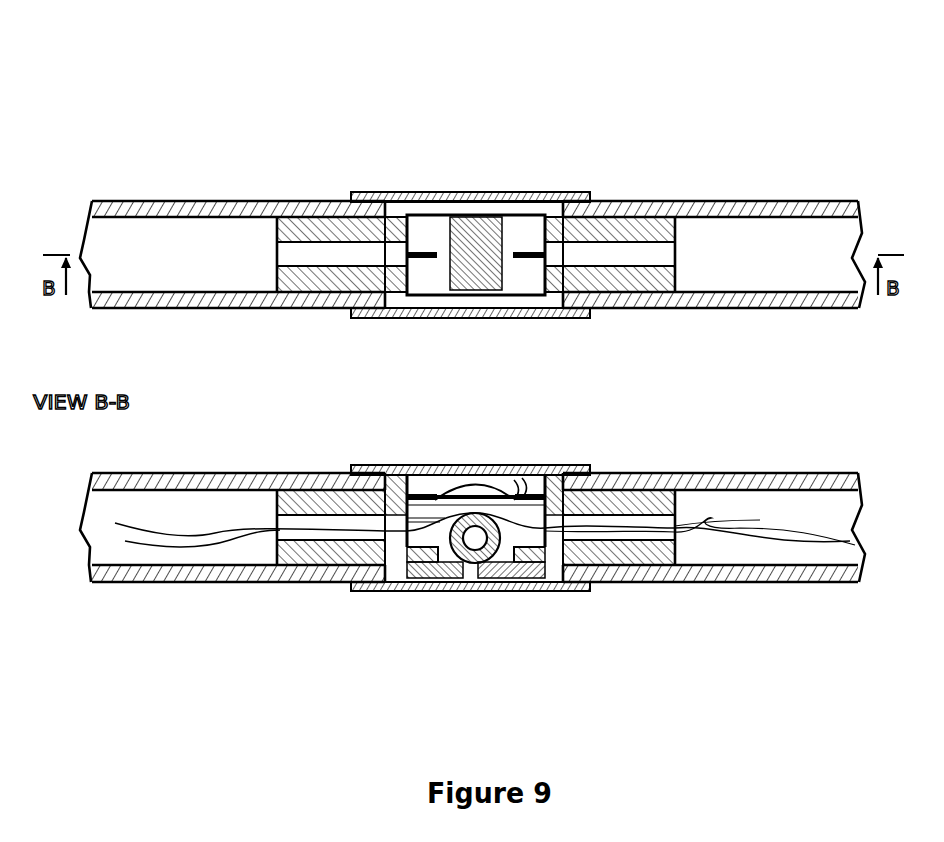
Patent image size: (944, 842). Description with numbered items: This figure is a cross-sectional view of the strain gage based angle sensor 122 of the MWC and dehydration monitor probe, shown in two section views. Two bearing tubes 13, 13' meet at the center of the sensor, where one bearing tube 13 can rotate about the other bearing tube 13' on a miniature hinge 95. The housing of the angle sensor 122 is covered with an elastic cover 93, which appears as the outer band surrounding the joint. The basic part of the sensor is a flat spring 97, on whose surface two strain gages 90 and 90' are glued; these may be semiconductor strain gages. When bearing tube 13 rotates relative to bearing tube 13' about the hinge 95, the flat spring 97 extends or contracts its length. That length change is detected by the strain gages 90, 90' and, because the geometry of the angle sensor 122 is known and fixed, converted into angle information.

The bearing tube 13 is at (232, 389).
The bearing tube 13' is at (714, 447).
The elastic cover 93 is at (384, 193).
The angle sensor 122 is at (463, 148).
The strain gage 90 is at (395, 376).
The strain gage 90' is at (541, 376).
The flat spring 97 is at (476, 482).
The miniature hinge 95 is at (470, 563).